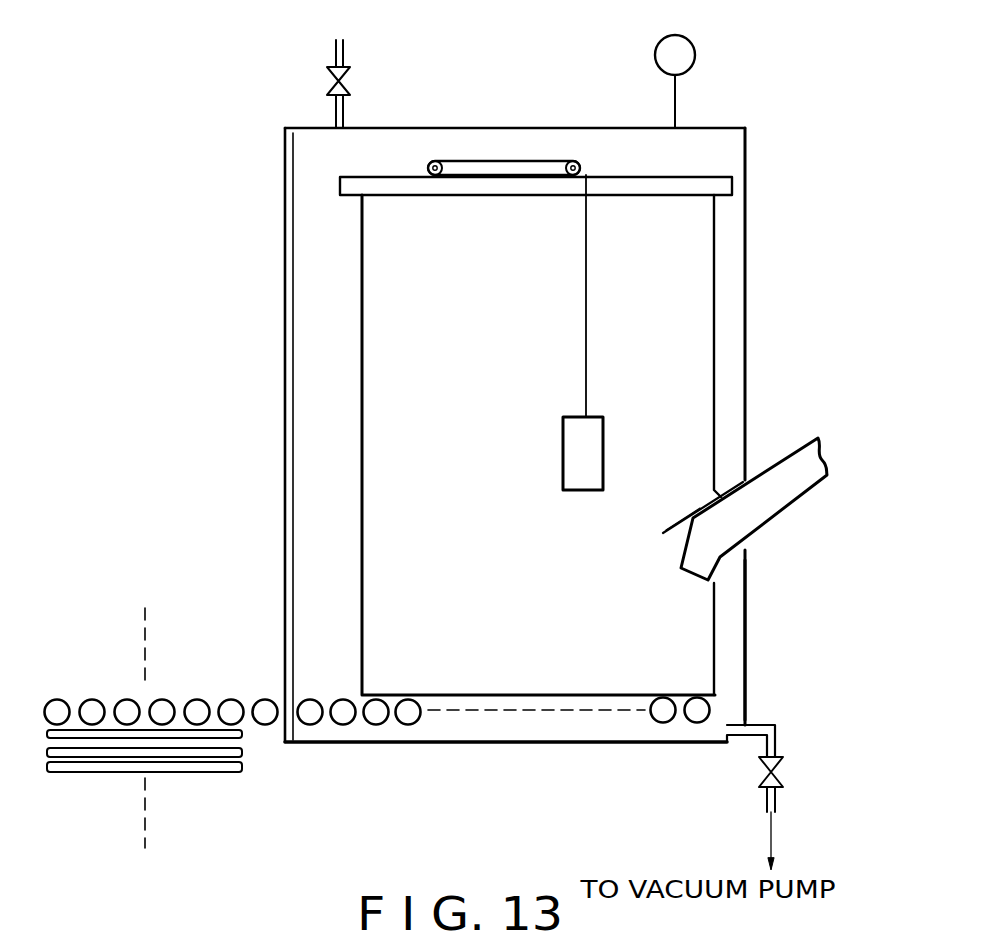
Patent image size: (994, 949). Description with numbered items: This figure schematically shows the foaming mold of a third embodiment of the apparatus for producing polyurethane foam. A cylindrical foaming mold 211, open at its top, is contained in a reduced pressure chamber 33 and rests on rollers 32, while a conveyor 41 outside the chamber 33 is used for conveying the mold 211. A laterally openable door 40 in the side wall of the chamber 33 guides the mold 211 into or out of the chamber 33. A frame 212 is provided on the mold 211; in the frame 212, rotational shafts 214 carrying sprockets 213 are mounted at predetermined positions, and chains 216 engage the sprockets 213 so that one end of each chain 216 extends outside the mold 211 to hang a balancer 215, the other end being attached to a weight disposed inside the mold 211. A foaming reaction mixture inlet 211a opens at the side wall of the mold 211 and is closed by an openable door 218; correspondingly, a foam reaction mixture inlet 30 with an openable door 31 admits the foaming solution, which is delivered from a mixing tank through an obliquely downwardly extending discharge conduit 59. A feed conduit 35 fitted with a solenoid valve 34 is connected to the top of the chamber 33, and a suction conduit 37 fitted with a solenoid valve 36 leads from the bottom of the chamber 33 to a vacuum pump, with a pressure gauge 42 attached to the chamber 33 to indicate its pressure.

The foam reaction mixture inlet 30 is at (721, 565).
The openable door 31 is at (663, 530).
The rollers 32 is at (375, 716).
The reduced pressure chamber 33 is at (746, 228).
The solenoid valve 34 is at (351, 80).
The feed conduit 35 is at (346, 41).
The solenoid valve 36 is at (759, 760).
The suction conduit 37 is at (765, 801).
The laterally openable door 40 is at (285, 176).
The conveyor 41 is at (60, 780).
The pressure gauge 42 is at (696, 50).
The foaming solution discharge conduit 59 is at (792, 474).
The cylindrical foaming mold 211 is at (362, 545).
The foaming reaction mixture inlet 211a is at (744, 540).
The frame 212 is at (720, 176).
The sprockets 213 is at (428, 167).
The rotational shafts 214 is at (437, 159).
The balancers 215 is at (563, 472).
The chains 216 is at (510, 160).
The openable door 218 is at (730, 488).